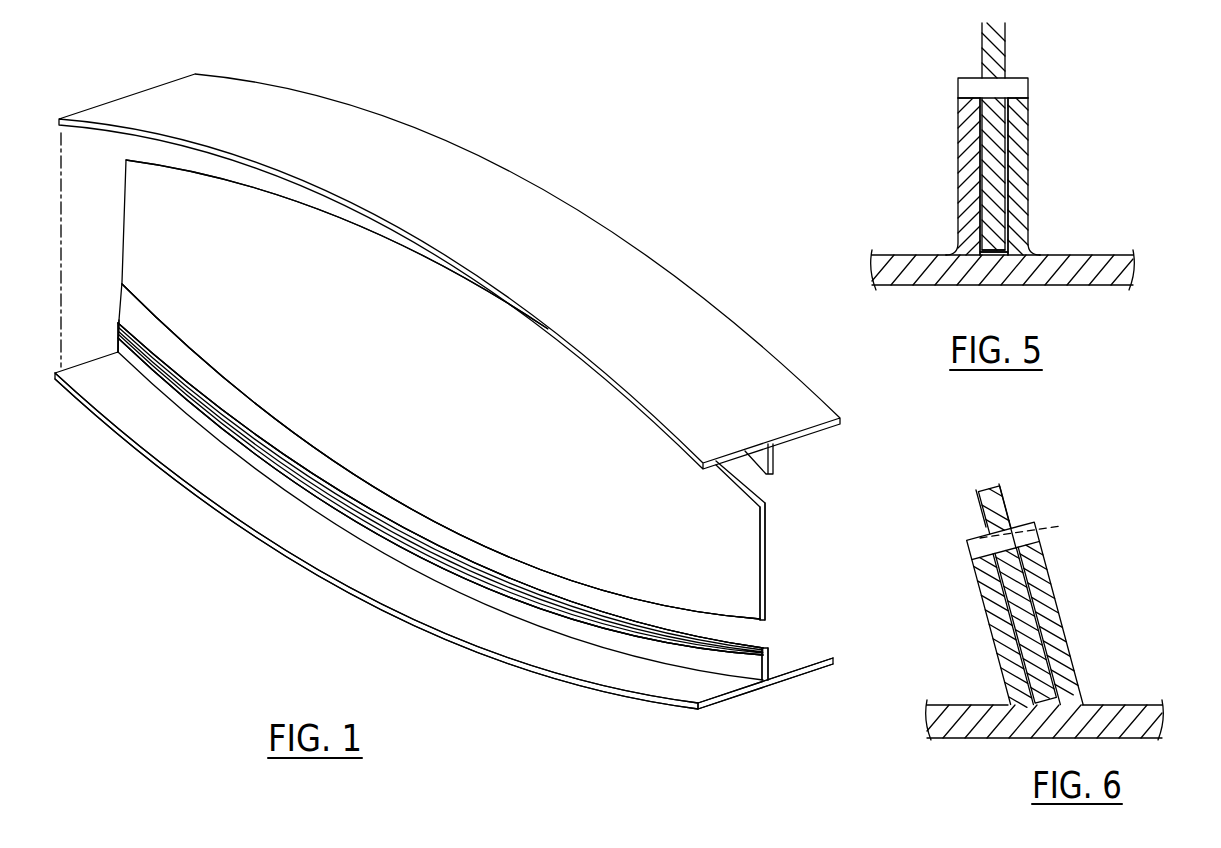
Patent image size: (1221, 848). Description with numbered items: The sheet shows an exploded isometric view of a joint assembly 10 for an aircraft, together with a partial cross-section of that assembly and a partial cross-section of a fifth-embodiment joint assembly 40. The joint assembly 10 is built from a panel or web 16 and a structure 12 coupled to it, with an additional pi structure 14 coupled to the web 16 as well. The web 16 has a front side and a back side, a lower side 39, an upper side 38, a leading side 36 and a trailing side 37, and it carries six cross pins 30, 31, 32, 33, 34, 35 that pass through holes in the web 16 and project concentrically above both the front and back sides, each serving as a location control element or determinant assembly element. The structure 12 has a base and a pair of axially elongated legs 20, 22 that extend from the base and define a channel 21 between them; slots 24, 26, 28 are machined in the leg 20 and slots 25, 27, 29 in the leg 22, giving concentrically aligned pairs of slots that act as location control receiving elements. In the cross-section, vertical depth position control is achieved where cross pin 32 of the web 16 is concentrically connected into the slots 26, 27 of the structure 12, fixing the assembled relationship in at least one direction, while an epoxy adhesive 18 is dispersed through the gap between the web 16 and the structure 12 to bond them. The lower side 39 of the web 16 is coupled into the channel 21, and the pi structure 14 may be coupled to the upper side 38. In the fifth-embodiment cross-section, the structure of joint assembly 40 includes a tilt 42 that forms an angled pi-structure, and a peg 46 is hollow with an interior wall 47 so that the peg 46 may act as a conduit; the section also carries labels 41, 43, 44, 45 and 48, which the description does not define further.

In FIG. 1, the joint assembly 10 is at (193, 537).
In FIG. 5, the joint assembly 10 is at (860, 128).
In FIG. 1, the structure 12 is at (355, 577).
In FIG. 5, the structure 12 is at (898, 255).
In FIG. 1, the pi structure 14 is at (787, 385).
In FIG. 1, the web 16 is at (523, 627).
In FIG. 5, the web 16 is at (1003, 47).
In FIG. 5, the adhesive 18 is at (1020, 185).
In FIG. 1, the leg 20 is at (752, 682).
In FIG. 5, the leg 20 is at (965, 140).
In FIG. 1, the channel 21 is at (120, 312).
In FIG. 5, the channel 21 is at (997, 252).
In FIG. 1, the leg 22 is at (772, 660).
In FIG. 5, the leg 22 is at (1025, 148).
In FIG. 1, the slot 24 is at (667, 693).
In FIG. 1, the slot 25 is at (720, 638).
In FIG. 1, the slot 26 is at (440, 565).
In FIG. 5, the slot 26 is at (958, 103).
In FIG. 1, the slot 27 is at (468, 542).
In FIG. 5, the slot 27 is at (1028, 104).
In FIG. 1, the slot 28 is at (222, 357).
In FIG. 1, the slot 29 is at (178, 385).
In FIG. 1, the cross pin 30 is at (712, 590).
In FIG. 1, the cross pin 31 is at (700, 478).
In FIG. 1, the cross pin 32 is at (441, 504).
In FIG. 5, the cross pin 32 is at (970, 78).
In FIG. 1, the cross pin 33 is at (444, 293).
In FIG. 1, the cross pin 34 is at (178, 317).
In FIG. 1, the cross pin 35 is at (183, 195).
In FIG. 1, the leading side 36 is at (800, 522).
In FIG. 1, the trailing side 37 is at (92, 245).
In FIG. 1, the upper side 38 is at (332, 212).
In FIG. 1, the lower side 39 is at (597, 680).
In FIG. 5, the lower side 39 is at (985, 262).
In FIG. 6, the joint assembly 40 is at (1127, 643).
In FIG. 6, the channel wall 41 is at (1045, 587).
In FIG. 6, the tilt 42 is at (988, 693).
In FIG. 6, the web 43 is at (999, 484).
In FIG. 6, the web edge 44 is at (1012, 505).
In FIG. 6, the web edge 45 is at (976, 520).
In FIG. 6, the peg 46 is at (1025, 517).
In FIG. 6, the interior wall 47 is at (1035, 524).
In FIG. 6, the channel wall 48 is at (1053, 622).